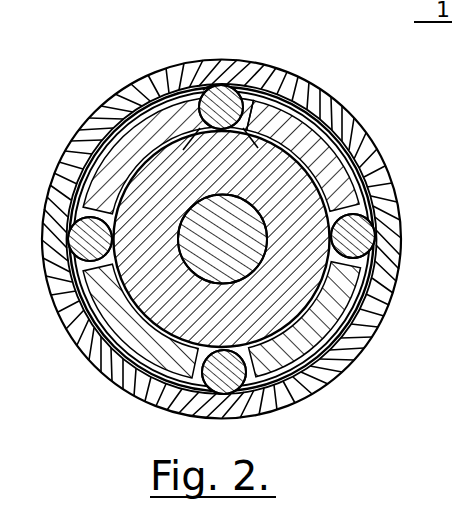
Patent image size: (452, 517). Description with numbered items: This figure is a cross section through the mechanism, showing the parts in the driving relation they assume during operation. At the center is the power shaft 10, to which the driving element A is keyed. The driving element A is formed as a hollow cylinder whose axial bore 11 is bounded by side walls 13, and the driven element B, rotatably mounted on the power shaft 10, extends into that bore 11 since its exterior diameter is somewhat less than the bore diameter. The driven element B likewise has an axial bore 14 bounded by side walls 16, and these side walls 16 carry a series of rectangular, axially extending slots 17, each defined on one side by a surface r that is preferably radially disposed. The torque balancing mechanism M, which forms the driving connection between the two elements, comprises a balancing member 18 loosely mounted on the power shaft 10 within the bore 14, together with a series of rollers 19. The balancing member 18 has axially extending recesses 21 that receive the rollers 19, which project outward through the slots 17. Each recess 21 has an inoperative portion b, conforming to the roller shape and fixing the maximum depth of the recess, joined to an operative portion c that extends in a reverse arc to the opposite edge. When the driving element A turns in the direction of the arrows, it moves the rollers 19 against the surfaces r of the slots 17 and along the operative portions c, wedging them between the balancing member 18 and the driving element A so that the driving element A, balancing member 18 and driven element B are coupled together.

The power shaft 10 is at (224, 264).
The axial bore 11 is at (303, 110).
The side walls 13 is at (367, 163).
The axial bore 14 is at (354, 298).
The side walls 16 is at (318, 366).
The slots 17 is at (246, 88).
The balancing member 18 is at (110, 368).
The rollers 19 is at (211, 90).
The recesses 21 is at (235, 128).
The surface r is at (296, 98).
The inoperative portion b is at (204, 130).
The operative portion c is at (251, 131).
The driving element A is at (78, 122).
The driven element B is at (311, 130).
The torque balancing mechanism M is at (152, 166).